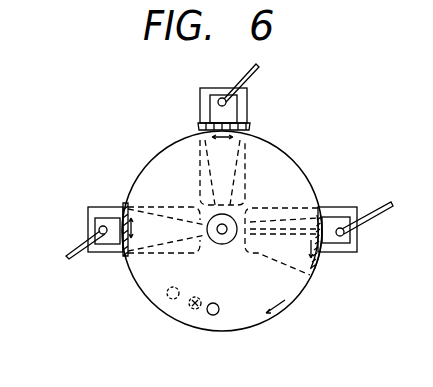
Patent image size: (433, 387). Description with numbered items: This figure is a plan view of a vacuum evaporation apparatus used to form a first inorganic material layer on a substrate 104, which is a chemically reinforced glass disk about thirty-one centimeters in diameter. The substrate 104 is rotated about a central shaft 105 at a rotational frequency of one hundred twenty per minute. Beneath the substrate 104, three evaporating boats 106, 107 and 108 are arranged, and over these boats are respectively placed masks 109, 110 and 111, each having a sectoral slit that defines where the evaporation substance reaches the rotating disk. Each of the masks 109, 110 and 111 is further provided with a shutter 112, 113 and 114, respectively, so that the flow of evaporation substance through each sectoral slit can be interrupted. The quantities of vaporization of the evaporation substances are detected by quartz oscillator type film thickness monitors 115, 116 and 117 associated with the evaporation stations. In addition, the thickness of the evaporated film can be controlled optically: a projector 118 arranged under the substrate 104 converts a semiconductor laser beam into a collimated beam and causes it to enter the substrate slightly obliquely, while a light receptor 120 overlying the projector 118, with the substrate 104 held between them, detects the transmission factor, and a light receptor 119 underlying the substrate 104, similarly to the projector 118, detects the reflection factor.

The substrate 104 is at (280, 164).
The central shaft 105 is at (222, 238).
The evaporating boat 106 is at (328, 222).
The evaporating boat 107 is at (111, 246).
The evaporating boat 108 is at (208, 117).
The mask 109 is at (345, 253).
The mask 110 is at (100, 212).
The mask 111 is at (201, 101).
The shutter 112 is at (314, 276).
The shutter 113 is at (125, 200).
The shutter 114 is at (203, 126).
The quartz oscillator type film thickness monitor 115 is at (356, 235).
The quartz oscillator type film thickness monitor 116 is at (95, 223).
The quartz oscillator type film thickness monitor 117 is at (219, 99).
The projector 118 is at (166, 293).
The light receptor 119 is at (189, 306).
The light receptor 120 is at (210, 315).